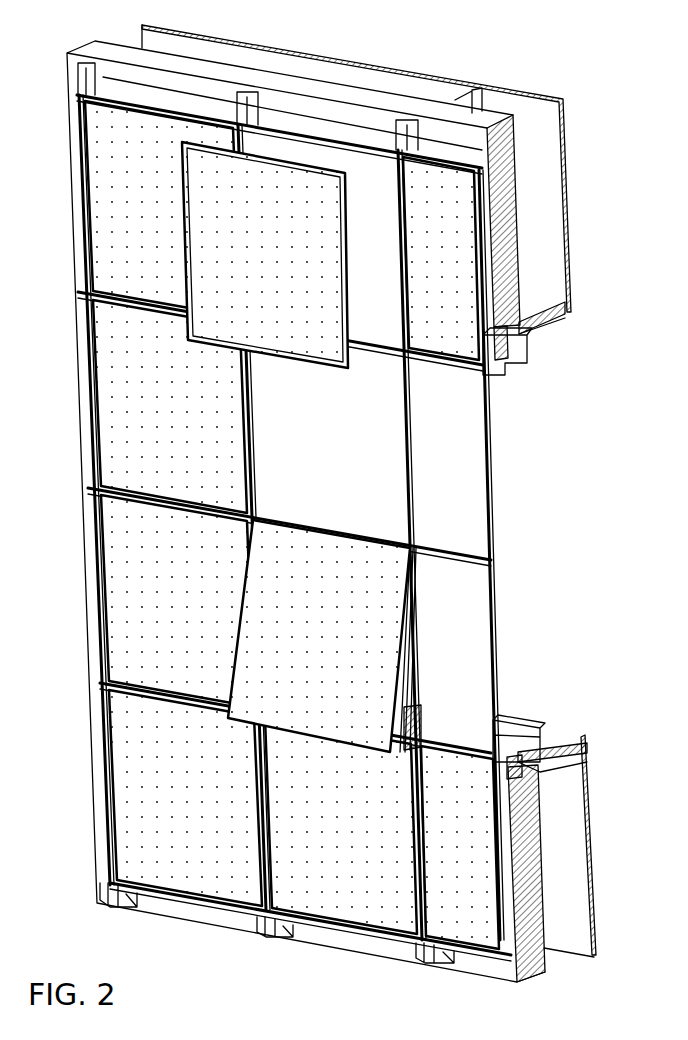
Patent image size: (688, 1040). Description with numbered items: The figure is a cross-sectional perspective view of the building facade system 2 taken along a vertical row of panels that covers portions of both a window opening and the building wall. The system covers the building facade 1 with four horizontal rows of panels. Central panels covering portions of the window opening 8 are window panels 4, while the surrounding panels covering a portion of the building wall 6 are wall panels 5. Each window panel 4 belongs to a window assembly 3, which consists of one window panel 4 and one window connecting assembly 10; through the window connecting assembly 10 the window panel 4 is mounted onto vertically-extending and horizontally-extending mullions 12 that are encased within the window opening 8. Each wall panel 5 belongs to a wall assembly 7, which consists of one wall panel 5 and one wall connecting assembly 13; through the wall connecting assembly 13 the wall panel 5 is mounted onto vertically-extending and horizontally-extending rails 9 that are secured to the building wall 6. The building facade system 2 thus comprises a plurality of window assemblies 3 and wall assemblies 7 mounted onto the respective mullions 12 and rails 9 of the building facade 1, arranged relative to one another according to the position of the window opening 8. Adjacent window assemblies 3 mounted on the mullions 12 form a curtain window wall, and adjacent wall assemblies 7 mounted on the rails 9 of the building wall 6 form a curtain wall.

The building facade 1 is at (568, 246).
The building facade system 2 is at (553, 518).
The window assembly 3 is at (290, 636).
The window panel 4 is at (326, 647).
The wall panel 5 is at (267, 264).
The building wall 6 is at (505, 188).
The wall assembly 7 is at (187, 255).
The window opening 8 is at (557, 445).
The rail 9 is at (342, 130).
The window connecting assembly 10 is at (410, 664).
The mullion 12 is at (527, 347).
The wall connecting assembly 13 is at (352, 278).